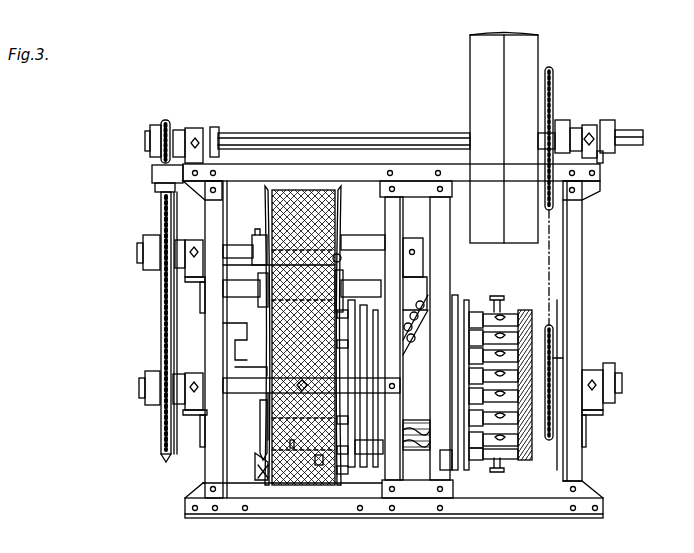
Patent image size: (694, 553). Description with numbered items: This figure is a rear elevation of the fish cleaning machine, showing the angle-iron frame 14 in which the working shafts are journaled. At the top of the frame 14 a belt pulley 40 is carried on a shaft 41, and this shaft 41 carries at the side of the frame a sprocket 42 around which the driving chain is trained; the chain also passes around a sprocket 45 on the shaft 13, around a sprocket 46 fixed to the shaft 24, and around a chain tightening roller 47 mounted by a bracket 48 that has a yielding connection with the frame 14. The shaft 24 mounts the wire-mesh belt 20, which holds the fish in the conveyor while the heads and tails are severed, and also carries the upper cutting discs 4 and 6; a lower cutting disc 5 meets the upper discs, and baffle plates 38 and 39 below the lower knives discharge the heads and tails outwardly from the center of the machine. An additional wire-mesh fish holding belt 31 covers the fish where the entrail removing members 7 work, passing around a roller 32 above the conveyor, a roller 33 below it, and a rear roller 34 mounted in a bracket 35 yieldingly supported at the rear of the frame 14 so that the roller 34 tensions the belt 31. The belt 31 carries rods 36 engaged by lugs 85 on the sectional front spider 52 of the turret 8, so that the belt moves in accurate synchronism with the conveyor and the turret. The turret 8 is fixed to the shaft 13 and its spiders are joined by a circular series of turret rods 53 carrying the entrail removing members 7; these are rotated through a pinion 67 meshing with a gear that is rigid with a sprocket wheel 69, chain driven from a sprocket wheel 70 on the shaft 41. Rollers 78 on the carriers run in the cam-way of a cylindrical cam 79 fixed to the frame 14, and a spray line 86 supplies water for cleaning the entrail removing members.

The upper cutting disc 4 is at (338, 222).
The lower cutting disc 5 is at (262, 421).
The upper cutting disc 6 is at (266, 206).
The entrail removing member 7 is at (460, 312).
The turret 8 is at (512, 312).
The shaft 13 is at (147, 386).
The frame 14 is at (587, 268).
The belt 20 is at (300, 193).
The shaft 24 is at (360, 252).
The fish holding belt 31 is at (267, 434).
The roller 32 is at (262, 300).
The roller 33 is at (268, 465).
The rear roller 34 is at (267, 377).
The bracket 35 is at (323, 387).
The rod 36 is at (323, 490).
The baffle plate 38 is at (268, 458).
The baffle plate 39 is at (345, 450).
The belt pulley 40 is at (523, 57).
The shaft 41 is at (418, 140).
The sprocket 42 is at (166, 121).
The sprocket 45 is at (168, 348).
The sprocket 46 is at (162, 207).
The chain tightening roller 47 is at (153, 167).
The bracket 48 is at (158, 186).
The front spider 52 is at (355, 315).
The turret rod 53 is at (384, 313).
The pinion 67 is at (533, 352).
The sprocket wheel 69 is at (554, 358).
The sprocket wheel 70 is at (554, 95).
The roller 78 is at (403, 345).
The cylindrical cam 79 is at (452, 458).
The lug 85 is at (267, 367).
The spray line 86 is at (334, 258).